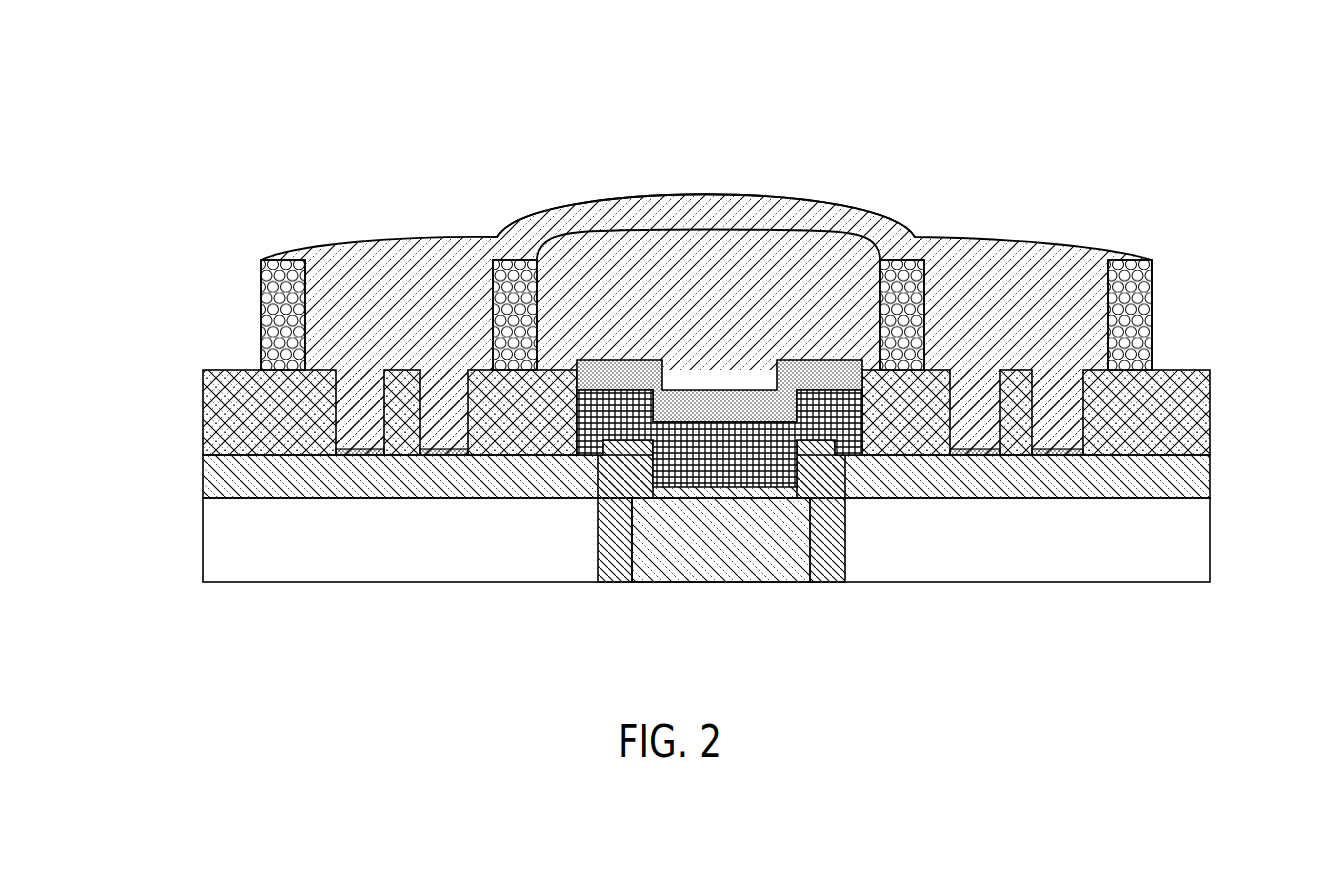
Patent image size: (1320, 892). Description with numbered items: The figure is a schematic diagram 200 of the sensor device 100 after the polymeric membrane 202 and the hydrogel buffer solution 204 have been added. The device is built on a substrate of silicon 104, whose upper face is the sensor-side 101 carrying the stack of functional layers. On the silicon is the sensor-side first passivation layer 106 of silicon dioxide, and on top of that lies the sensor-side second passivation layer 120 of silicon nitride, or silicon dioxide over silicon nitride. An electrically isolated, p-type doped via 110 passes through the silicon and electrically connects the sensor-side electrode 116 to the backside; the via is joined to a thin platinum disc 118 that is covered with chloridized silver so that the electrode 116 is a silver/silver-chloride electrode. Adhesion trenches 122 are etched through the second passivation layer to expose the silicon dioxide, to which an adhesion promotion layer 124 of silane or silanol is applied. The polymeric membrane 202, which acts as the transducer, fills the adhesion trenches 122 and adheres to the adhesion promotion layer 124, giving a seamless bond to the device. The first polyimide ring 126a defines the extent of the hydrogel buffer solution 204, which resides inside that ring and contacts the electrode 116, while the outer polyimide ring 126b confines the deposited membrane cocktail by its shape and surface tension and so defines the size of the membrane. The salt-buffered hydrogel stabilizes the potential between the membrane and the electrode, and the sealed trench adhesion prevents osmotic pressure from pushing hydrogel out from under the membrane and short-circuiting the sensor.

The sensor device 100 is at (706, 564).
The sensor-side 101 is at (670, 466).
The silicon 104 is at (910, 563).
The sensor-side first passivation layer 106 is at (1020, 477).
The via 110 is at (718, 563).
The sensor-side electrode 116 is at (592, 448).
The platinum disc 118 is at (748, 492).
The sensor-side second passivation layer 120 is at (1145, 432).
The adhesion trench 122 is at (1056, 416).
The adhesion promotion layer 124 is at (985, 449).
The first polyimide ring 126a is at (902, 262).
The outer polyimide ring 126b is at (1127, 262).
The schematic diagram 200 is at (703, 385).
The polymeric membrane 202 is at (382, 239).
The hydrogel buffer solution 204 is at (653, 227).